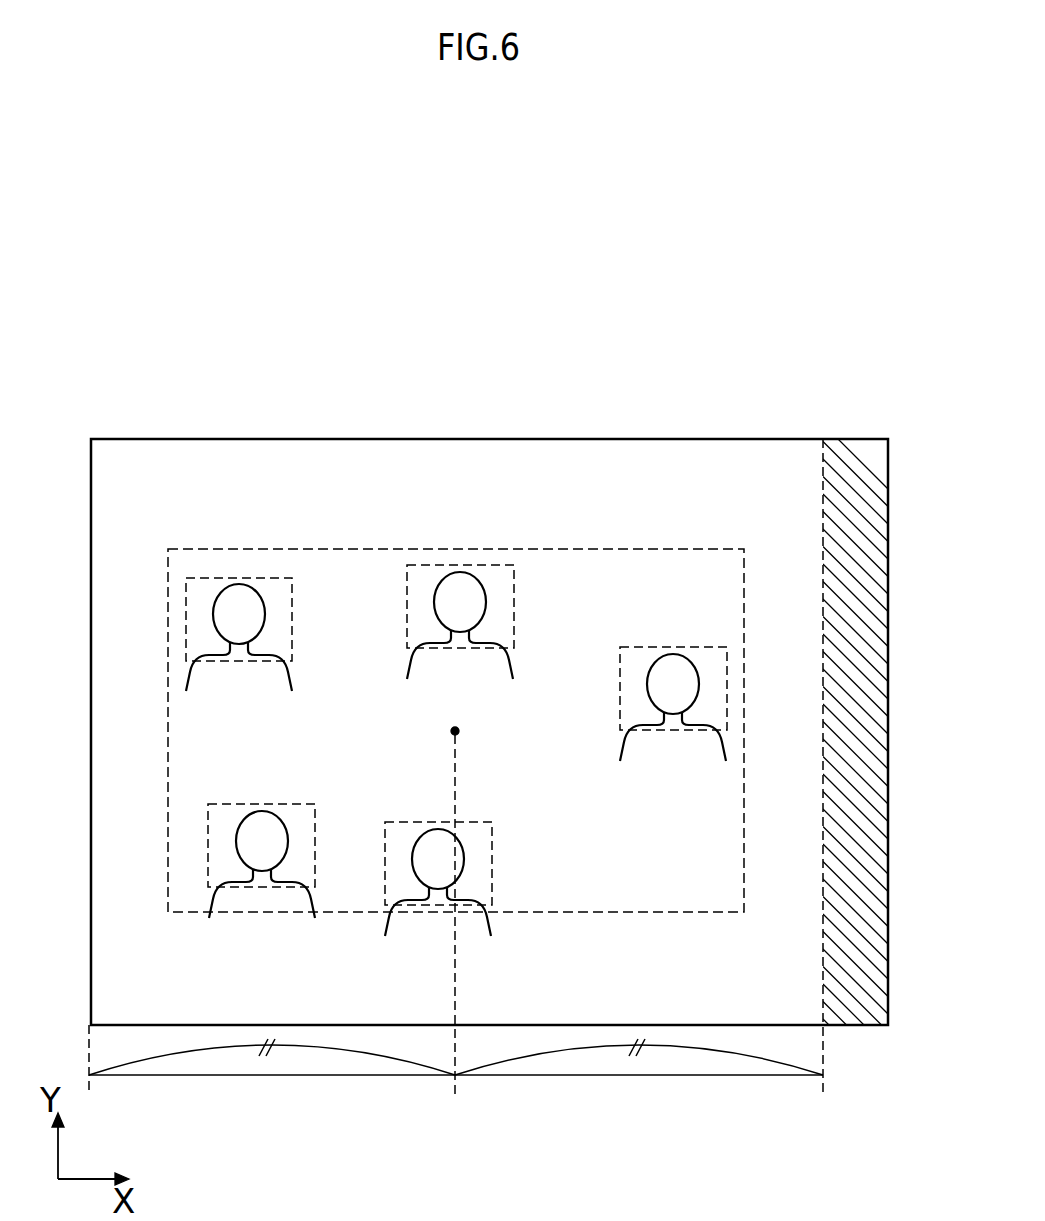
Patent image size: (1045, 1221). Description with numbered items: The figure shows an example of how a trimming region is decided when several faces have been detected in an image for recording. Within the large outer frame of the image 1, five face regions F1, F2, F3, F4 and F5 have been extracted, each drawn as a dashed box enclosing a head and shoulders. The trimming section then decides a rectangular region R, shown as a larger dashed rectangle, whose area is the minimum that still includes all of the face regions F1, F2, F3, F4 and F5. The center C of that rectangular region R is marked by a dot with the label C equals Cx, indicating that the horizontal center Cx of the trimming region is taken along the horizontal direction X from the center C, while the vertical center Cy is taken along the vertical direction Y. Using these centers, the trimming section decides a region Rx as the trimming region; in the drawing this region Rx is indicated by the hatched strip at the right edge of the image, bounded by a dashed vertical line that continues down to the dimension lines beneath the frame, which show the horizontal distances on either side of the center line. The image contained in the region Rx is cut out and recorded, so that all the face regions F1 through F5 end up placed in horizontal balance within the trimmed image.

The captured image / display screen 1 is at (889, 858).
The region Rx is at (823, 602).
The rectangular region R is at (746, 843).
The center C is at (502, 904).
The face region F1 is at (293, 620).
The face region F2 is at (515, 608).
The face region F3 is at (728, 690).
The face region F4 is at (316, 846).
The face region F5 is at (493, 866).